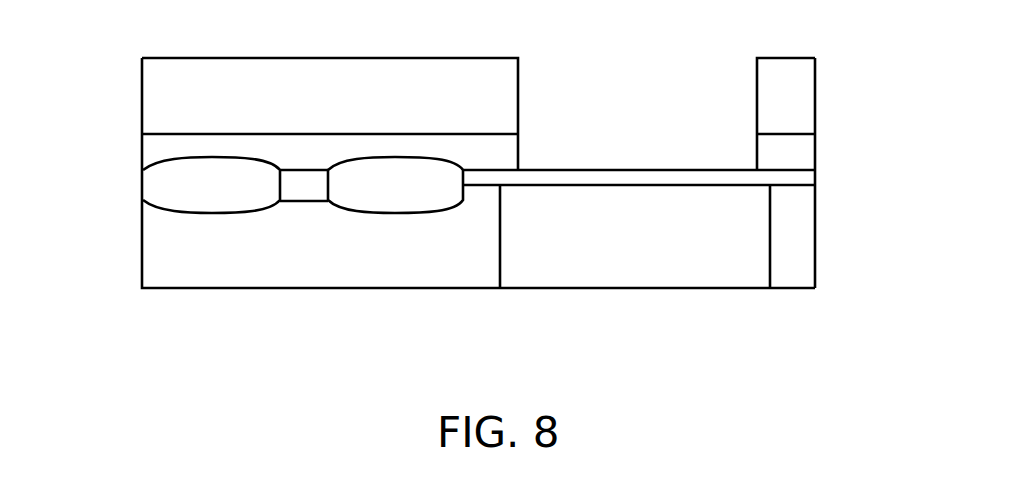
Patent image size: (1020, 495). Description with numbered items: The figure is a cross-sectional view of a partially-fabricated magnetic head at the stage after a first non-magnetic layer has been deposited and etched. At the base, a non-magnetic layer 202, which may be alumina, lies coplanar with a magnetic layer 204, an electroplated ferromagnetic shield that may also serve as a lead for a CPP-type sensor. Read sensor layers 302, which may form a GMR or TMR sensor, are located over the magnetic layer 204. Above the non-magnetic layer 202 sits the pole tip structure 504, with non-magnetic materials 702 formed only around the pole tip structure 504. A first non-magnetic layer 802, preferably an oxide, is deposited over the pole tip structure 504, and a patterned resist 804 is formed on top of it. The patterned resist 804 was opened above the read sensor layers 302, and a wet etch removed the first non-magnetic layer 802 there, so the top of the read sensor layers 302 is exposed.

The non-magnetic layer 202 is at (318, 288).
The magnetic layer 204 is at (647, 290).
The read sensor layers 302 is at (815, 183).
The pole tip structure 504 is at (292, 182).
The non-magnetic materials 702 is at (162, 198).
The first non-magnetic layer 802 is at (142, 147).
The patterned resist 804 is at (162, 75).